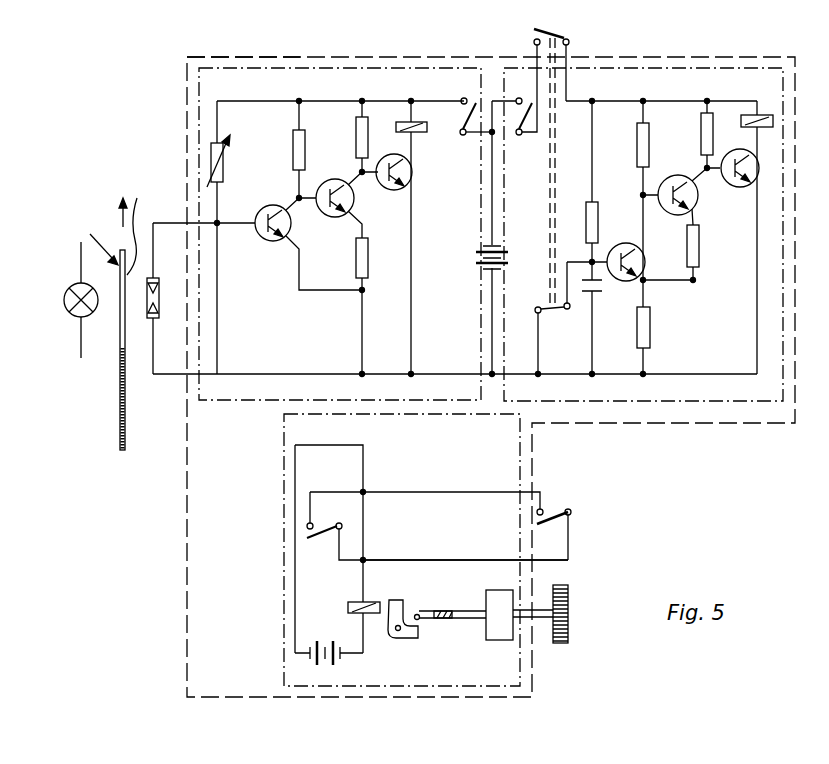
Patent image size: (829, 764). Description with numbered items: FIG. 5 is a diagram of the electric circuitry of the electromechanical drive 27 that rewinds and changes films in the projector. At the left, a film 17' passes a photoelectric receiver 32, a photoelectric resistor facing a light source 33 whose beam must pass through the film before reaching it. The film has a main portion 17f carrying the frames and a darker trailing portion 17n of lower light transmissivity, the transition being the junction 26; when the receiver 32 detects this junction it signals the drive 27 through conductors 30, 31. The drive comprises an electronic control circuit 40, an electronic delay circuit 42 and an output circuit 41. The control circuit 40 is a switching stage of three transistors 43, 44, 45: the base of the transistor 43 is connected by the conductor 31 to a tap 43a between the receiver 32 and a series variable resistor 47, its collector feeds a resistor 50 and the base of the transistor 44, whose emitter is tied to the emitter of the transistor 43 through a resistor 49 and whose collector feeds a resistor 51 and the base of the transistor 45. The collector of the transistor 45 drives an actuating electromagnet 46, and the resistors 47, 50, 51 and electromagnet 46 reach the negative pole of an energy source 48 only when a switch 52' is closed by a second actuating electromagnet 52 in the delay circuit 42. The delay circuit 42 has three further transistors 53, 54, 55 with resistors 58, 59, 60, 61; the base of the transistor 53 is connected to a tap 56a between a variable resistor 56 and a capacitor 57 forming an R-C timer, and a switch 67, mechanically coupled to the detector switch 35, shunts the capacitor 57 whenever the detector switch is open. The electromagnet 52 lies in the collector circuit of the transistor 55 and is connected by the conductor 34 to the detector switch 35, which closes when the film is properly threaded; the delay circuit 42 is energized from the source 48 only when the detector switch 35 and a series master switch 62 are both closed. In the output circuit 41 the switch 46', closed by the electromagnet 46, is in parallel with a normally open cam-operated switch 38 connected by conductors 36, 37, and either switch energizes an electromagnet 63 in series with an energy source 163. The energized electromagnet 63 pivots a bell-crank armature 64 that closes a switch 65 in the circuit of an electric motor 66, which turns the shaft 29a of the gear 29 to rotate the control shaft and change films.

The film 17' is at (93, 237).
The main portion 17f is at (144, 223).
The trailing portion 17n is at (119, 419).
The junction 26 is at (120, 351).
The electromechanical drive 27 is at (257, 52).
The gear 29 is at (568, 612).
The shaft 29a is at (542, 620).
The conductor 30 is at (176, 377).
The conductor 31 is at (176, 223).
The photoelectric receiver 32 is at (161, 306).
The light source 33 is at (535, 40).
The conductor 34 is at (569, 40).
The detector switch 35 is at (557, 35).
The conductor 36 is at (542, 488).
The conductor 37 is at (568, 560).
The cam-operated switch 38 is at (566, 507).
The electronic control circuit 40 is at (301, 62).
The output circuit 41 is at (528, 452).
The electronic delay circuit 42 is at (514, 57).
The transistor 43 is at (259, 240).
The tap 43a is at (217, 228).
The transistor 44 is at (323, 215).
The transistor 45 is at (386, 188).
The actuating electromagnet 46 is at (421, 131).
The switch 46' is at (432, 533).
The variable resistor 47 is at (223, 180).
The energy source 48 is at (476, 253).
The resistor 49 is at (356, 258).
The resistor 50 is at (294, 150).
The resistor 51 is at (356, 148).
The second actuating electromagnet 52 is at (759, 101).
The switch 52' is at (463, 106).
The transistor 53 is at (645, 275).
The transistor 54 is at (665, 214).
The transistor 55 is at (727, 187).
The variable resistor 56 is at (598, 222).
The tap 56a is at (590, 262).
The capacitor 57 is at (603, 286).
The resistor 58 is at (699, 247).
The resistor 59 is at (652, 328).
The resistor 60 is at (637, 148).
The further resistor 61 is at (701, 137).
The master switch 62 is at (518, 101).
The electromagnet 63 is at (347, 608).
The armature 64 is at (406, 639).
The switch 65 is at (416, 614).
The electric motor 66 is at (494, 640).
The switch 67 is at (556, 313).
The energy source 163 is at (335, 672).